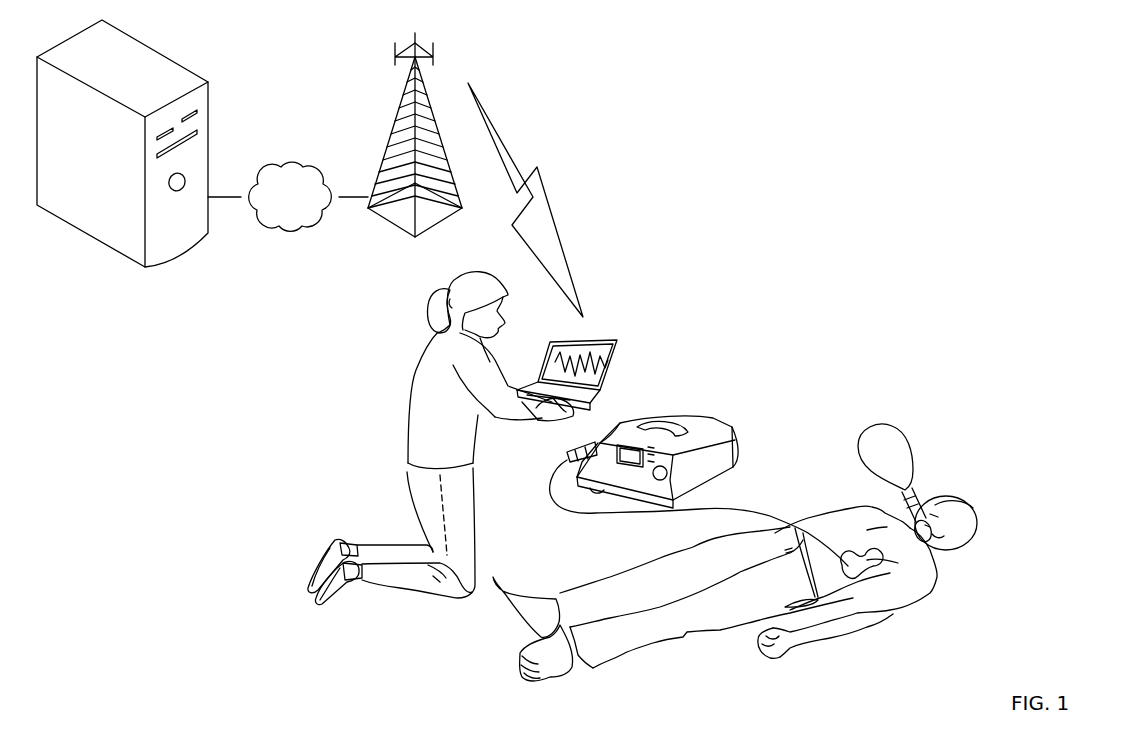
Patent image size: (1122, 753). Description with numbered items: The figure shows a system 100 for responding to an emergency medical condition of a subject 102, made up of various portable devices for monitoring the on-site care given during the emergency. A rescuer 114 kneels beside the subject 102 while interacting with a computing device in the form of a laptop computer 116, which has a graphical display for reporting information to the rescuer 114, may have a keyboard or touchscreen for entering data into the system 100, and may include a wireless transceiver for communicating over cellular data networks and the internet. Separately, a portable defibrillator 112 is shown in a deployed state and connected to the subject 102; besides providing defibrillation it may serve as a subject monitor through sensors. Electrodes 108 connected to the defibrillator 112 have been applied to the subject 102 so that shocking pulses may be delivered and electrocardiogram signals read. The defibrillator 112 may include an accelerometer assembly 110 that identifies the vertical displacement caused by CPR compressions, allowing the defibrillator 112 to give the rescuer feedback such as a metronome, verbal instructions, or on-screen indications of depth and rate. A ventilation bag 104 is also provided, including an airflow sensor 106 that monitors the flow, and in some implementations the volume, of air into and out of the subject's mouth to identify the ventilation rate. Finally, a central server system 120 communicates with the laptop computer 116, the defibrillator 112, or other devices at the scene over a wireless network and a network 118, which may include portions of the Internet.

The system 100 is at (278, 410).
The subject 102 is at (977, 525).
The ventilation bag 104 is at (888, 437).
The airflow sensor 106 is at (930, 492).
The electrodes 108 is at (853, 577).
The accelerometer assembly 110 is at (900, 566).
The portable defibrillator 112 is at (688, 413).
The rescuer 114 is at (408, 413).
The laptop computer 116 is at (603, 337).
The network 118 is at (310, 207).
The central server system 120 is at (198, 232).